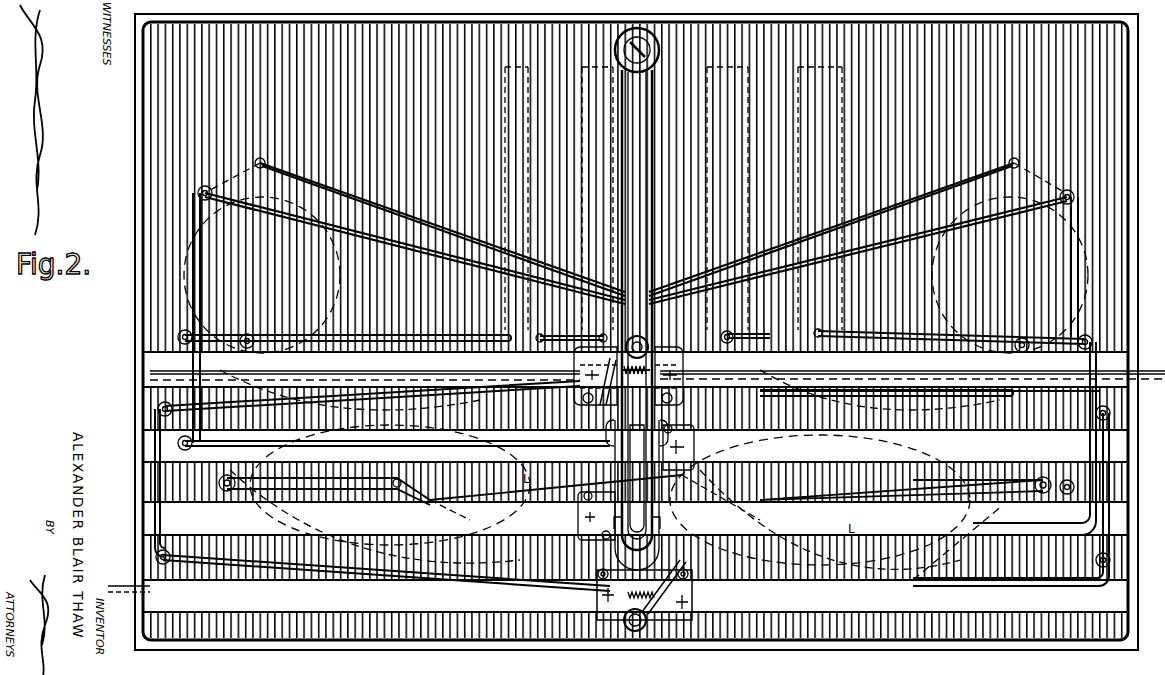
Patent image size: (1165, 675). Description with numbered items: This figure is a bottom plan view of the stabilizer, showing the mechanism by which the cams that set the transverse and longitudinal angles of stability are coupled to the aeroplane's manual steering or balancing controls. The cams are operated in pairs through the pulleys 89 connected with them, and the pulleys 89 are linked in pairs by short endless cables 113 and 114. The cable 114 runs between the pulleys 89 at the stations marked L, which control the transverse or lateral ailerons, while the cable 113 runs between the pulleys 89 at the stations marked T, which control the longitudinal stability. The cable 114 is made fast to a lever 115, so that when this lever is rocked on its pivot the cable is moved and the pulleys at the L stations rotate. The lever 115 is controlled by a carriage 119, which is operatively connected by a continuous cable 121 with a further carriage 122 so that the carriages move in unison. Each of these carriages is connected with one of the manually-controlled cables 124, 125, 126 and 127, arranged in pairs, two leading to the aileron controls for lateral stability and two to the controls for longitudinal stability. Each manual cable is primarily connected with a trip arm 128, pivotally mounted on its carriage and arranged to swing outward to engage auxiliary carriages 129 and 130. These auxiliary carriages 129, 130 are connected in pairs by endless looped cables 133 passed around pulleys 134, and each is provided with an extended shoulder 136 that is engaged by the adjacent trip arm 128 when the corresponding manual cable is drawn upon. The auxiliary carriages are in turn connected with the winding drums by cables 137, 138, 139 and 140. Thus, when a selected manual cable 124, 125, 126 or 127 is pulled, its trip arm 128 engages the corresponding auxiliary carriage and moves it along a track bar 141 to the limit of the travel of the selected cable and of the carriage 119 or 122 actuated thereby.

The endless cable 113 is at (890, 212).
The endless cable 114 is at (438, 245).
The lever 115 is at (634, 292).
The pulleys 89 is at (336, 290).
The cable 139 is at (455, 334).
The cable 140 is at (560, 330).
The cable 138 is at (806, 328).
The cable 137 is at (910, 333).
The carriage 119 is at (580, 352).
The trip arm 128 is at (575, 375).
The manually-controlled cable 124 is at (1150, 370).
The manually-controlled cable 126 is at (1150, 376).
The continuous cable 121 is at (226, 398).
The track bar 141 is at (368, 440).
The pulleys 134 is at (234, 484).
The endless looped cables 133 is at (312, 492).
The auxiliary carriage 129 is at (678, 447).
The extended shoulder 136 is at (637, 493).
The auxiliary carriage 130 is at (596, 516).
The carriage 122 is at (644, 600).
The manually-controlled cable 125 is at (118, 584).
The manually-controlled cable 127 is at (120, 592).